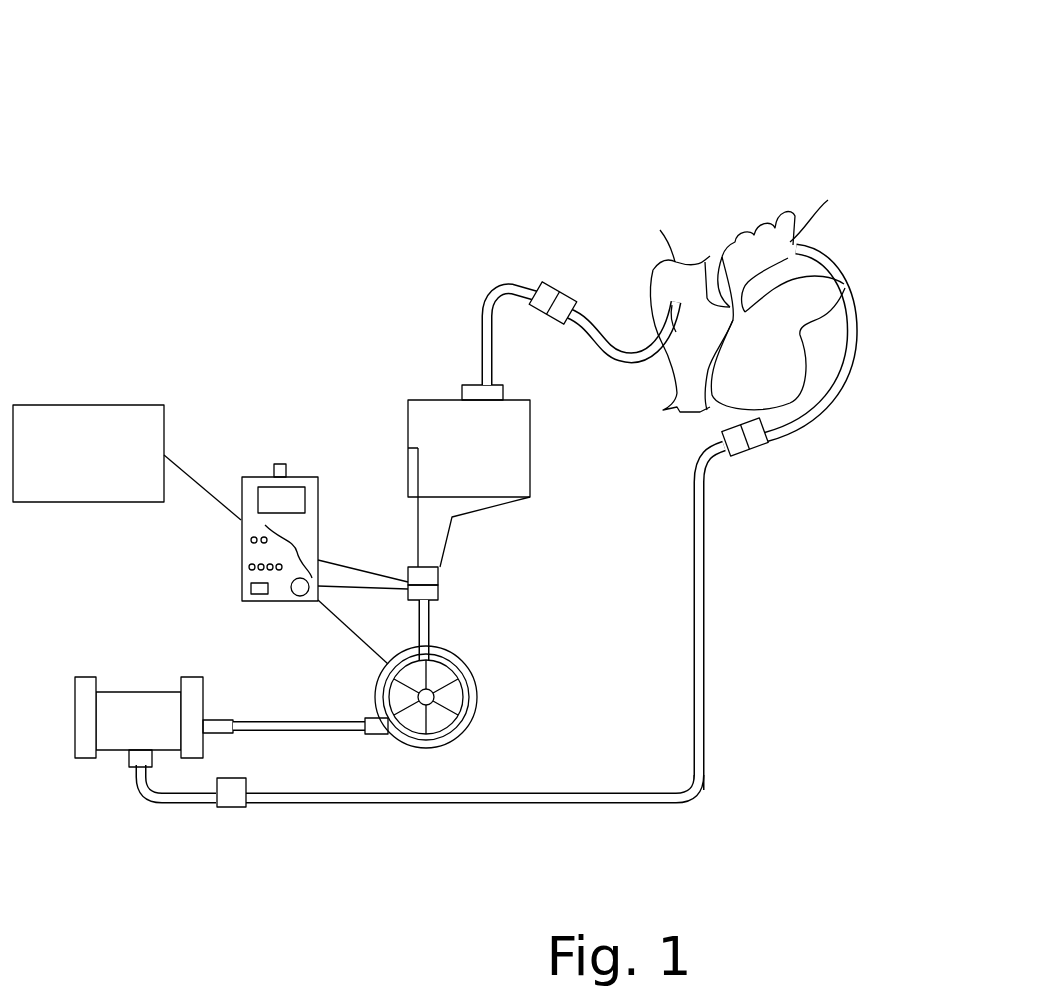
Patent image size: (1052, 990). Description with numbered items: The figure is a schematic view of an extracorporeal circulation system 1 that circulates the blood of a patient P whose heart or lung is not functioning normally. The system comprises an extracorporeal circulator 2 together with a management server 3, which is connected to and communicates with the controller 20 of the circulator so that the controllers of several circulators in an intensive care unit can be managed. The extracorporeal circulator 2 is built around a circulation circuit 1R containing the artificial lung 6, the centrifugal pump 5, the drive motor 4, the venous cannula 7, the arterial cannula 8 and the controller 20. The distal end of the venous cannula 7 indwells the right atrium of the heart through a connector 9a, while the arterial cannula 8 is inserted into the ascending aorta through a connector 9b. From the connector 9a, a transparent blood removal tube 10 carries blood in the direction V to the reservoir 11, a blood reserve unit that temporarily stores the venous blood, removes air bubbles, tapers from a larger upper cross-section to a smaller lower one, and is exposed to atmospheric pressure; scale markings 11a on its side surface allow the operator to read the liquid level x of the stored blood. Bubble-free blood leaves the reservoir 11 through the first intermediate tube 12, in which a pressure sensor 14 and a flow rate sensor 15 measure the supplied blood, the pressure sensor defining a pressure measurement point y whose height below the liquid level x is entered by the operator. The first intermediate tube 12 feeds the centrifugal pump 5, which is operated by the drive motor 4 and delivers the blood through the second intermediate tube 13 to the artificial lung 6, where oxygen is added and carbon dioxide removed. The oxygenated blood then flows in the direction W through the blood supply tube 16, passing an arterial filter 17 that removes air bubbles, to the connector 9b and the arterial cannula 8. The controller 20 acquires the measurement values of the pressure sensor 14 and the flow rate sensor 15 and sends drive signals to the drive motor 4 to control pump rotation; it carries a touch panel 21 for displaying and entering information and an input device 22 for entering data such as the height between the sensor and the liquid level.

The extracorporeal circulation system 1 is at (169, 90).
The circulation circuit 1R is at (695, 854).
The extracorporeal circulator 2 is at (562, 237).
The management server 3 is at (95, 404).
The drive motor 4 is at (475, 670).
The centrifugal pump 5 is at (458, 694).
The artificial lung 6 is at (137, 691).
The venous cannula 7 is at (587, 292).
The arterial cannula 8 is at (857, 320).
The connector 9a is at (553, 320).
The connector 9b is at (755, 452).
The blood removal tube 10 is at (480, 304).
The reservoir 11 is at (532, 460).
The scale markings 11a is at (412, 464).
The first intermediate tube 12 is at (432, 630).
The second intermediate tube 13 is at (290, 718).
The pressure sensor 14 is at (440, 575).
The flow rate sensor 15 is at (440, 590).
The blood supply tube 16 is at (576, 806).
The arterial filter 17 is at (248, 784).
The controller 20 is at (304, 476).
The touch panel 21 is at (305, 498).
The input device 22 is at (300, 550).
The patient P is at (739, 203).
The direction V is at (470, 320).
The direction W is at (670, 728).
The liquid level x is at (460, 497).
The pressure measurement point y is at (407, 576).